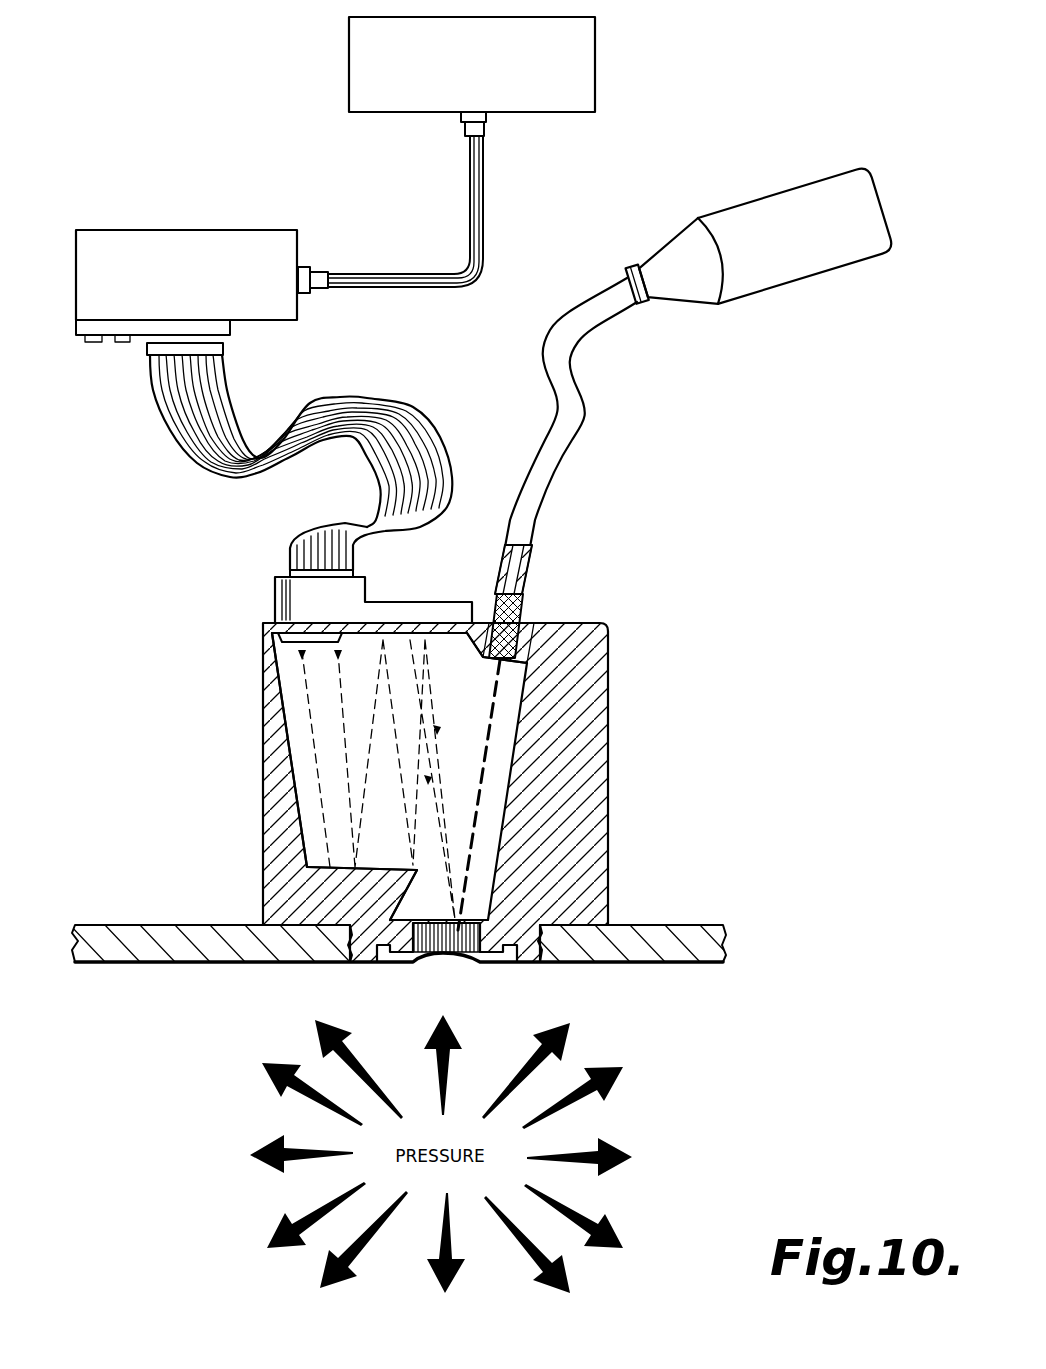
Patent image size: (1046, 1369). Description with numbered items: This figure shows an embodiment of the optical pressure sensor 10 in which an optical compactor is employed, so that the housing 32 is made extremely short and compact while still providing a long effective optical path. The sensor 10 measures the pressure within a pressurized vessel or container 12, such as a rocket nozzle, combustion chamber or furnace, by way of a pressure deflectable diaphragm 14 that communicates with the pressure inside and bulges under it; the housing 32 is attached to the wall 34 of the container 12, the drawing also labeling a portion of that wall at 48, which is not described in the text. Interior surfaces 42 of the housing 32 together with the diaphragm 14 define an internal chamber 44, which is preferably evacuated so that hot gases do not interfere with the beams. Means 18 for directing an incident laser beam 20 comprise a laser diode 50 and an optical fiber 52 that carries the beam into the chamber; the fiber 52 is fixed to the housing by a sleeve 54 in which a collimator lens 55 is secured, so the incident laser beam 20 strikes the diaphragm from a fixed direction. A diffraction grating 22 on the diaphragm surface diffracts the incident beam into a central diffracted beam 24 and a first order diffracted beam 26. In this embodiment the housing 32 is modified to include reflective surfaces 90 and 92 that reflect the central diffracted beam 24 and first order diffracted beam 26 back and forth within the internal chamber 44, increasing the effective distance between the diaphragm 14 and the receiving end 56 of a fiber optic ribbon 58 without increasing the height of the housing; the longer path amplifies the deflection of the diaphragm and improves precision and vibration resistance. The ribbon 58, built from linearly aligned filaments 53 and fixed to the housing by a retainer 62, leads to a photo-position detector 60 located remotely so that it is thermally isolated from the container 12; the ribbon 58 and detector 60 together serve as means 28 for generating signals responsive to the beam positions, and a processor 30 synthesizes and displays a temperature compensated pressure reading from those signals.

The optical pressure sensor 10 is at (792, 462).
The pressurized vessel or container 12 is at (694, 910).
The pressure deflectable diaphragm 14 is at (400, 967).
The means for directing an incident laser beam 18 is at (618, 484).
The incident laser beam 20 is at (527, 707).
The diffraction grating 22 is at (443, 960).
The central diffracted beam 24 is at (440, 752).
The first order diffracted beam 26 is at (437, 812).
The means for generating signals 28 is at (183, 472).
The processor 30 is at (595, 63).
The housing 32 is at (487, 680).
The wall of container 34 is at (627, 925).
The interior surfaces 42 is at (268, 795).
The internal chamber 44 is at (590, 650).
The plate lower surface 48 is at (235, 962).
The laser diode 50 is at (770, 290).
The optical fiber 52 is at (587, 398).
The linearly aligned filaments 53 is at (355, 563).
The sleeve 54 is at (532, 555).
The collimator lens 55 is at (520, 612).
The receiving end of fiber optic ribbon 56 is at (283, 652).
The fiber optic ribbon 58 is at (377, 505).
The photo-position detector 60 is at (262, 232).
The retainer 62 is at (483, 182).
The reflective surface 90 is at (447, 626).
The reflective surface 92 is at (297, 858).